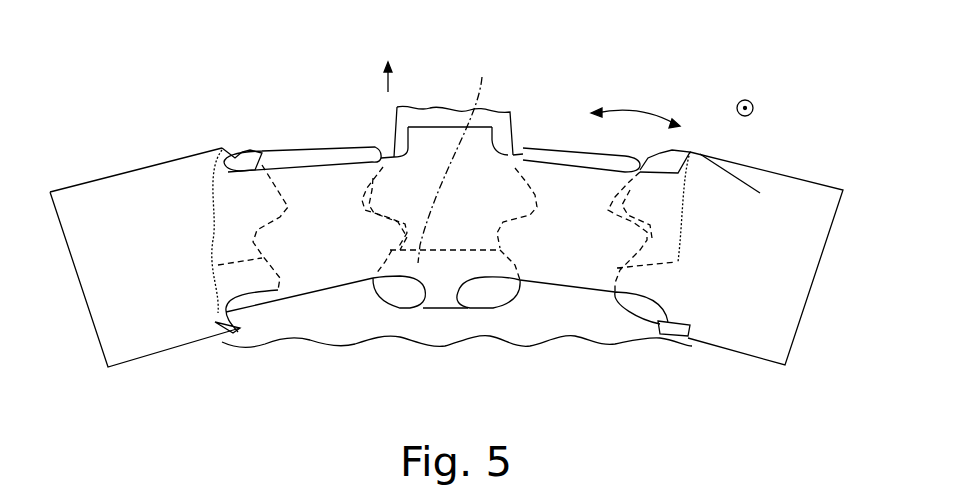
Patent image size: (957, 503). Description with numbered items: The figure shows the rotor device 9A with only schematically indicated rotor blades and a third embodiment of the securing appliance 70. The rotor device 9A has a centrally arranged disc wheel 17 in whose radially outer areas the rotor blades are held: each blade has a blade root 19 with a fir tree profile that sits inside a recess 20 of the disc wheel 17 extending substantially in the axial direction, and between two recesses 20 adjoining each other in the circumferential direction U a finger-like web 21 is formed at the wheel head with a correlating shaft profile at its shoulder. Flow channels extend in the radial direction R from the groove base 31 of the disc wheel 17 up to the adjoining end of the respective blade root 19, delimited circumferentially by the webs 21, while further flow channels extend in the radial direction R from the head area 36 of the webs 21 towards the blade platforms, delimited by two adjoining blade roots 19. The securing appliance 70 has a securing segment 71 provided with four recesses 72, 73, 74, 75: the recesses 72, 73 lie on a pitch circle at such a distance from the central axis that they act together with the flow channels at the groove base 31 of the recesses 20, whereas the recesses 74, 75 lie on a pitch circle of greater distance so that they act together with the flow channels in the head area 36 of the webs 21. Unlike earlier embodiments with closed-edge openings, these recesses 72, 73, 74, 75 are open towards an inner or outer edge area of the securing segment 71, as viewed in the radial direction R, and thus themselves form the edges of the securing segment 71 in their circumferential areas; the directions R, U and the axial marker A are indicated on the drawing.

The rotor device 9A is at (78, 158).
The disc wheel 17 is at (325, 339).
The blade root 19 is at (250, 157).
The recess 20 is at (457, 157).
The finger-like web 21 is at (302, 163).
The groove base 31 is at (415, 310).
The head area 36 is at (338, 147).
The securing appliance 70 is at (827, 183).
The securing segment 71 is at (760, 193).
The recess 72 is at (215, 322).
The recess 73 is at (685, 336).
The recess 74 is at (220, 148).
The recess 75 is at (684, 164).
The radial direction R is at (386, 84).
The circumferential direction U is at (632, 110).
The axial direction A is at (752, 103).